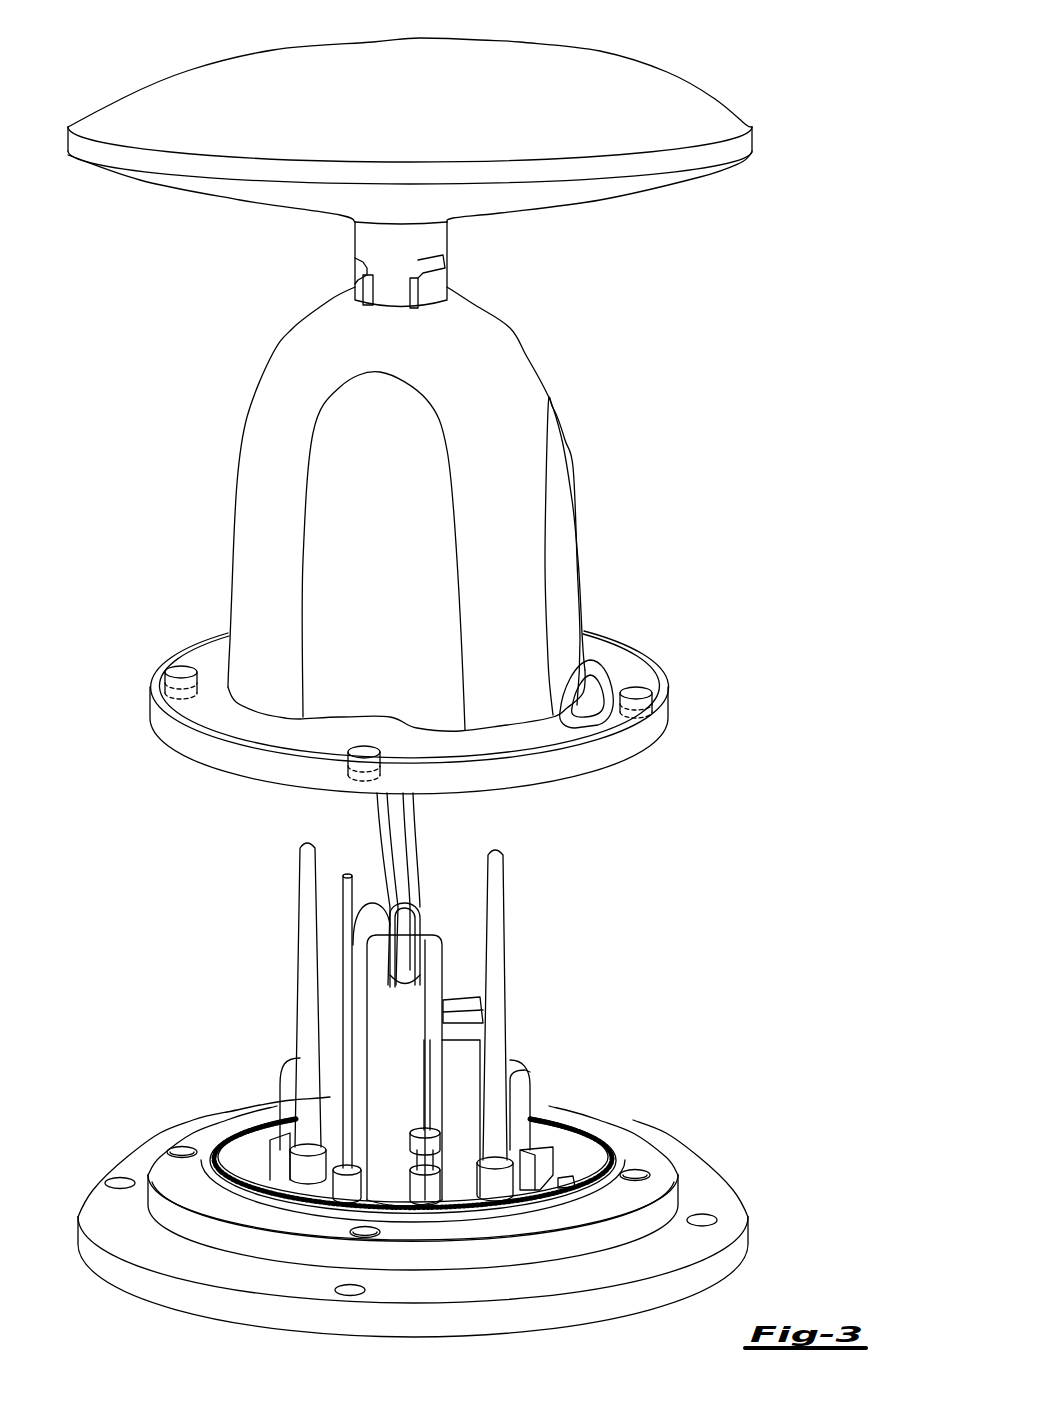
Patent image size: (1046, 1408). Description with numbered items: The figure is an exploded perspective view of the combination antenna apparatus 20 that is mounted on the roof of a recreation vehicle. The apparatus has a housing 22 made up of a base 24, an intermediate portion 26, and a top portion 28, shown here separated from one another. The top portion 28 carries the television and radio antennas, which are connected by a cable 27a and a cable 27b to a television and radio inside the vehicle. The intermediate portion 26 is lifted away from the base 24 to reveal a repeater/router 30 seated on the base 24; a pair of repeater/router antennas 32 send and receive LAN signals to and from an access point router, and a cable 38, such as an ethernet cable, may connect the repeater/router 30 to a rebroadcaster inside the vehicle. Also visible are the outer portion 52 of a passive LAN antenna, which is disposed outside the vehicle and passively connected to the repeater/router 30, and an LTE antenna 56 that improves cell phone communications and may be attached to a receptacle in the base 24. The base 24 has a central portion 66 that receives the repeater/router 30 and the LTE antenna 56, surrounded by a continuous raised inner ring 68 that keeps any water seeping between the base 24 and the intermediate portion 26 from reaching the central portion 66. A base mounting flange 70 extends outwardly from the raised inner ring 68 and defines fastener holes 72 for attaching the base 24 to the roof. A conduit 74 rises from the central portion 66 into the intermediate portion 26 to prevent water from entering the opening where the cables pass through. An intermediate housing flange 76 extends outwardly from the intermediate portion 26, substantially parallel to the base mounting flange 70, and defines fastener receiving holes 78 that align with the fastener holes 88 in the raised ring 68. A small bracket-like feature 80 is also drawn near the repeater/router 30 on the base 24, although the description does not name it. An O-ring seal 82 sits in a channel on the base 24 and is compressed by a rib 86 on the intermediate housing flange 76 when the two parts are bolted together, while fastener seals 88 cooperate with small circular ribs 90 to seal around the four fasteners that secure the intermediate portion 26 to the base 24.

The combination antenna apparatus 20 is at (708, 50).
The housing 22 is at (373, 509).
The base 24 is at (407, 1202).
The intermediate portion 26 is at (250, 507).
The cable 27a is at (417, 837).
The cable 27b is at (383, 815).
The top portion 28 is at (195, 88).
The repeater/router 30 is at (470, 1152).
The repeater/router antennas 32 is at (308, 928).
The cable 38 is at (373, 900).
The outer portion 52 is at (423, 1093).
The LTE antenna 56 is at (348, 898).
The central portion 66 is at (242, 1168).
The raised inner ring 68 is at (600, 1132).
The base mounting flange 70 is at (127, 1226).
The fastener holes 72 is at (703, 1220).
The conduit 74 is at (433, 970).
The intermediate housing flange 76 is at (429, 699).
The fastener receiving holes 78 is at (180, 1148).
The bracket 80 is at (543, 1170).
The O-ring seal 82 is at (567, 1177).
The rib 86 is at (593, 713).
The fastener seals 88 is at (637, 1170).
The small circular ribs 90 is at (185, 695).